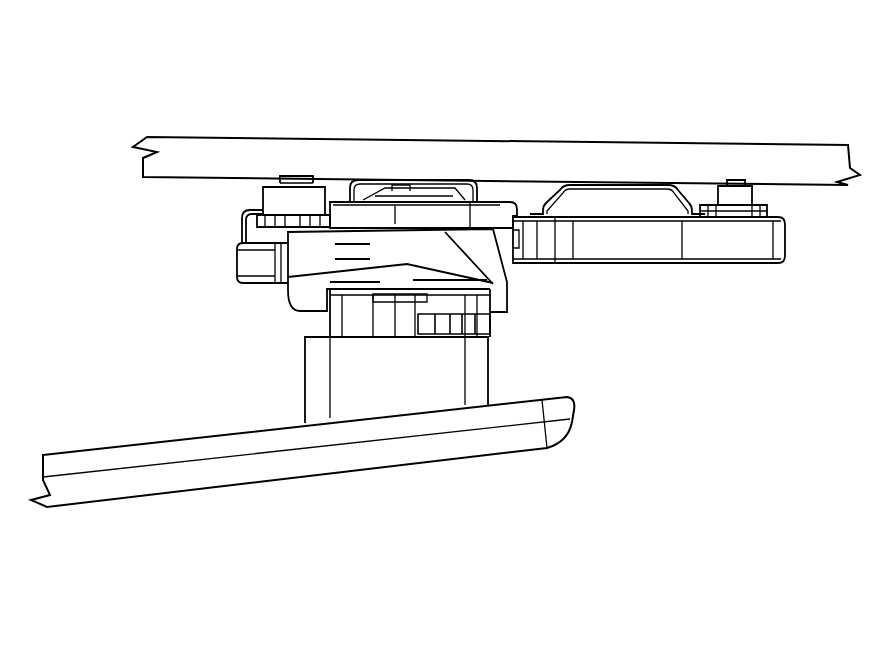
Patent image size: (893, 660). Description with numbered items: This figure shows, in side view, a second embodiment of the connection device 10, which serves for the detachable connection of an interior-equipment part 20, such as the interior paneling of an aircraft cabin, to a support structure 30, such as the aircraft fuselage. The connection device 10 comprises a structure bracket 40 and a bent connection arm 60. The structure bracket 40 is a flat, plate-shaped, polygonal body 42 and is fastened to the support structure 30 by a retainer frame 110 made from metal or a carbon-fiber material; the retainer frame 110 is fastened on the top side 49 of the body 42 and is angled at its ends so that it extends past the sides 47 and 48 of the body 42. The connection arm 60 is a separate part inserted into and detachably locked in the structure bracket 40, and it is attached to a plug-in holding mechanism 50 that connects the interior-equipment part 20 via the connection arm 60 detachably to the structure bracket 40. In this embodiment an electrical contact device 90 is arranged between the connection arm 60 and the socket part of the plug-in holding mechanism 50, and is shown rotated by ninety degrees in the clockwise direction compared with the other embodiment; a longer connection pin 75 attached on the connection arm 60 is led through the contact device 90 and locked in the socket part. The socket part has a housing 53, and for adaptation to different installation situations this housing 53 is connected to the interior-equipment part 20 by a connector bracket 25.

The connection device 10 is at (120, 127).
The interior-equipment part 20 is at (135, 480).
The connector bracket 25 is at (440, 367).
The support structure 30 is at (692, 165).
The structure bracket 40 is at (792, 269).
The body 42 is at (753, 240).
The side 47 is at (788, 230).
The side 48 is at (238, 222).
The top side 49 is at (627, 217).
The plug-in holding mechanism 50 is at (258, 327).
The housing 53 is at (507, 312).
The bent connection arm 60 is at (488, 198).
The connection pin 75 is at (403, 185).
The electrical contact device 90 is at (323, 255).
The retainer frame 110 is at (572, 220).